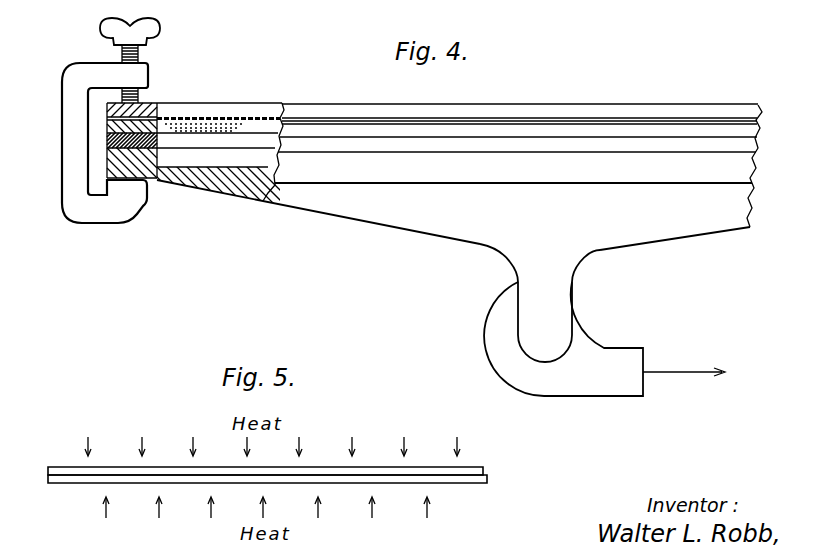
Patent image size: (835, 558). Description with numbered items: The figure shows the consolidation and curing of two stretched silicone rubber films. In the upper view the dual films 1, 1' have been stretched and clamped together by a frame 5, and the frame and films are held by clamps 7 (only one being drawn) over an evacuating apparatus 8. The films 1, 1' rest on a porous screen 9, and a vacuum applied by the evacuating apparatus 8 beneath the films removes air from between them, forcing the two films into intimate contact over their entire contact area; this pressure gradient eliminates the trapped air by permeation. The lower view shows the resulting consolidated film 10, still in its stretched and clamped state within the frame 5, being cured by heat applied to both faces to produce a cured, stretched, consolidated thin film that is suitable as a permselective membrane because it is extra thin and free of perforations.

In FIG. 4, the silicone rubber film 1 is at (434, 145).
In FIG. 4, the second silicone rubber film 1' is at (431, 188).
In FIG. 4, the frame 5 is at (235, 93).
In FIG. 5, the frame 5 is at (56, 457).
In FIG. 4, the clamp 7 is at (62, 106).
In FIG. 4, the evacuating apparatus 8 is at (492, 309).
In FIG. 4, the porous screen 9 is at (200, 130).
In FIG. 4, the consolidated film 10 is at (766, 113).
In FIG. 5, the consolidated film 10 is at (80, 476).